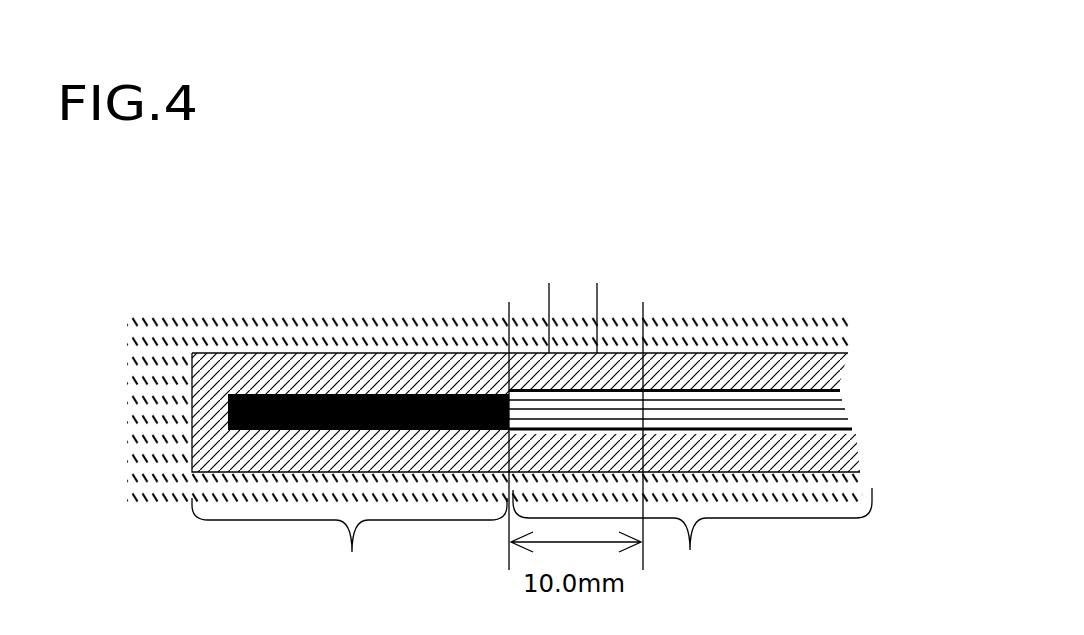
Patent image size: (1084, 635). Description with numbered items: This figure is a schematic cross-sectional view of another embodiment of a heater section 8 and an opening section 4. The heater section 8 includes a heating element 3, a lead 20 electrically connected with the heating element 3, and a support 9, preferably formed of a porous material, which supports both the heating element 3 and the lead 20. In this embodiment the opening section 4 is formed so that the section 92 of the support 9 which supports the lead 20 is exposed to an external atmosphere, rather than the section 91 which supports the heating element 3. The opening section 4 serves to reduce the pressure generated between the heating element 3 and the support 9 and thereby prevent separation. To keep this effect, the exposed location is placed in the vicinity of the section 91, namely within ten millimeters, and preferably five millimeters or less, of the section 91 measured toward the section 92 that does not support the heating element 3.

The heating element 3 is at (365, 397).
The opening section 4 is at (577, 288).
The heater section 8 is at (662, 333).
The support 9 is at (260, 360).
The lead 20 is at (792, 357).
The section of the support which supports the heating element 91 is at (349, 543).
The section of the support which supports the lead 92 is at (692, 535).